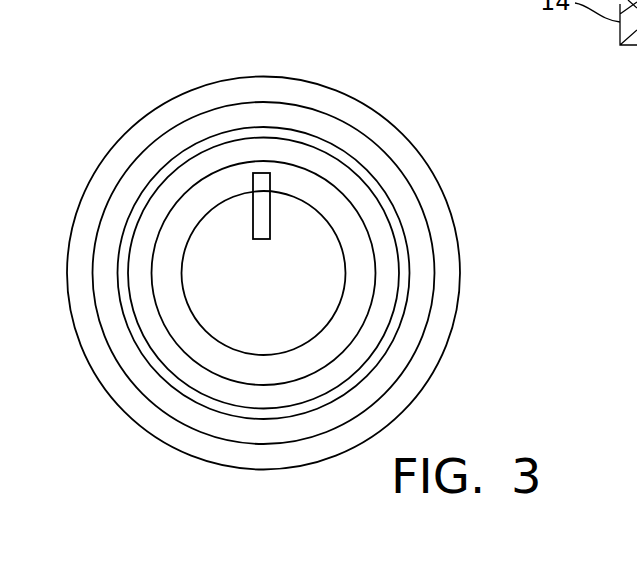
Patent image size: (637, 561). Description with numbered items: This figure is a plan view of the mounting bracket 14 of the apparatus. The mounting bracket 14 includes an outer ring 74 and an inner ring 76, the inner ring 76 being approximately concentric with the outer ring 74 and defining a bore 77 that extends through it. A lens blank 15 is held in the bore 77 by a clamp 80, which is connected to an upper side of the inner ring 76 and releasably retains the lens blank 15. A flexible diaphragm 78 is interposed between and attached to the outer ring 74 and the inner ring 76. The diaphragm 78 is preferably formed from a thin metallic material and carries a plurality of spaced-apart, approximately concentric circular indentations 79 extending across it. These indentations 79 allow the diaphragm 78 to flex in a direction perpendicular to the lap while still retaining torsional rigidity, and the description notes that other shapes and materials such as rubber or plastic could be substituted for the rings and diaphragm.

The mounting bracket 14 is at (305, 67).
The lens blank 15 is at (280, 314).
The outer ring 74 is at (122, 135).
The inner ring 76 is at (152, 257).
The bore 77 is at (181, 283).
The flexible diaphragm 78 is at (243, 428).
The circular indentations 79 is at (165, 372).
The clamp 80 is at (271, 222).